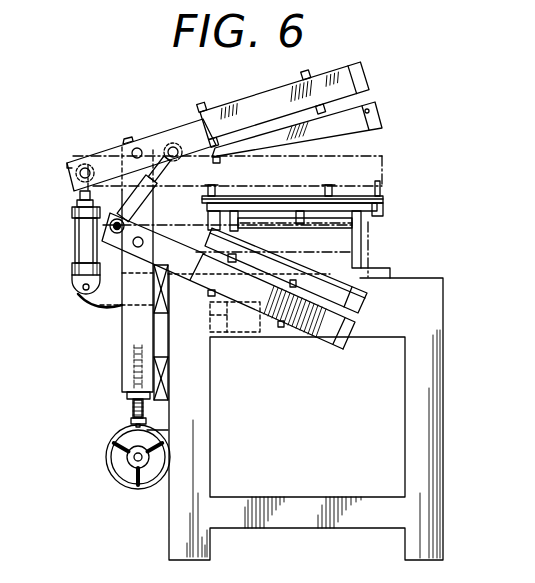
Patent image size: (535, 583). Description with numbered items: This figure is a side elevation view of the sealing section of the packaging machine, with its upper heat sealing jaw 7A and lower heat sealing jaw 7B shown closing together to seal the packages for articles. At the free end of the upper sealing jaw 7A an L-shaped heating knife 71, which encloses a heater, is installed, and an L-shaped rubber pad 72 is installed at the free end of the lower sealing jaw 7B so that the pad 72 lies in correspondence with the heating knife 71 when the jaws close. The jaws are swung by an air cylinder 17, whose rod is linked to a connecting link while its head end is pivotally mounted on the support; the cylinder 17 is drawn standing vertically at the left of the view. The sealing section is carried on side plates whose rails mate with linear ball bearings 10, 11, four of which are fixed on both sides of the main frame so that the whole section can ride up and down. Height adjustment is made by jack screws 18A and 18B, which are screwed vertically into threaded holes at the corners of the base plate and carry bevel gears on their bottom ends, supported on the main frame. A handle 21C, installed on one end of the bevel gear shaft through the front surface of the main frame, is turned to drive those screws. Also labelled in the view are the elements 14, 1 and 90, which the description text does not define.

The upper swing arm 14 is at (152, 134).
The upper heat sealing jaw 7A is at (338, 70).
The L-shaped heating knife 71 is at (383, 108).
The machine body 1 is at (404, 204).
The L-shaped rubber pad 72 is at (368, 302).
The lower heat sealing jaw 7B is at (343, 340).
The linear ball bearing 10 is at (168, 303).
The linear ball bearing 11 is at (168, 380).
The air cylinder 17 is at (78, 249).
The vertical post 90 is at (122, 328).
The jack screw 18A is at (122, 378).
The jack screw 18B is at (92, 416).
The handle 21C is at (139, 490).